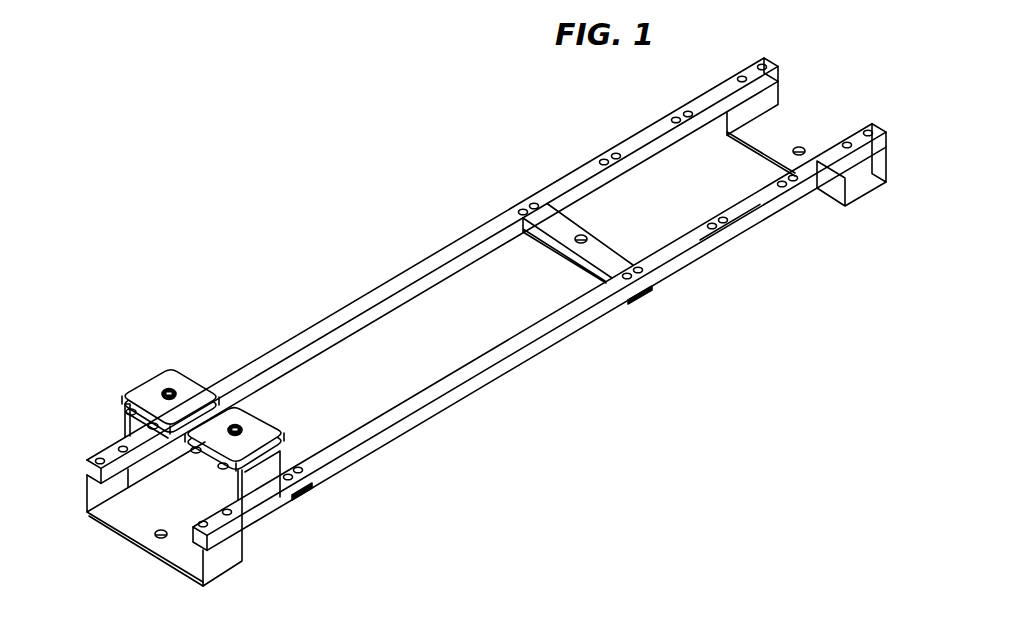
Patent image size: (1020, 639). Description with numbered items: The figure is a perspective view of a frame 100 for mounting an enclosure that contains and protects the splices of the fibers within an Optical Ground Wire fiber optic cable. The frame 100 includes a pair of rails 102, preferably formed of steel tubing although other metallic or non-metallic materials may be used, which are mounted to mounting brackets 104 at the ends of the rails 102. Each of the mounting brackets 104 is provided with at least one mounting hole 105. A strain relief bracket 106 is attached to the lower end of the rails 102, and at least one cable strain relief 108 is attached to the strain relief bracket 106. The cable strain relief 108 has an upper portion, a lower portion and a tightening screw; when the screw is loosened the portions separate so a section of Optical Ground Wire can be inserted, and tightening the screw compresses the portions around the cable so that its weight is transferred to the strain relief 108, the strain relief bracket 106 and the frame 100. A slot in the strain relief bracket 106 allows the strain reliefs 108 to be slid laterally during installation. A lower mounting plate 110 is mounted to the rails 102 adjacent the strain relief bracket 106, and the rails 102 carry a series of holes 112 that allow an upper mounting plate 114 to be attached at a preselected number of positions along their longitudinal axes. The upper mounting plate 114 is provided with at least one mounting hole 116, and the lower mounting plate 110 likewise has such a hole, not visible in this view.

The frame 100 is at (352, 232).
The rails 102 is at (316, 328).
The mounting brackets 104 is at (748, 158).
The mounting hole 105 is at (800, 146).
The strain relief bracket 106 is at (115, 417).
The cable strain relief 108 is at (154, 381).
The lower mounting plate 110 is at (300, 450).
The holes 112 is at (731, 218).
The upper mounting plate 114 is at (570, 260).
The mounting hole 116 is at (586, 236).